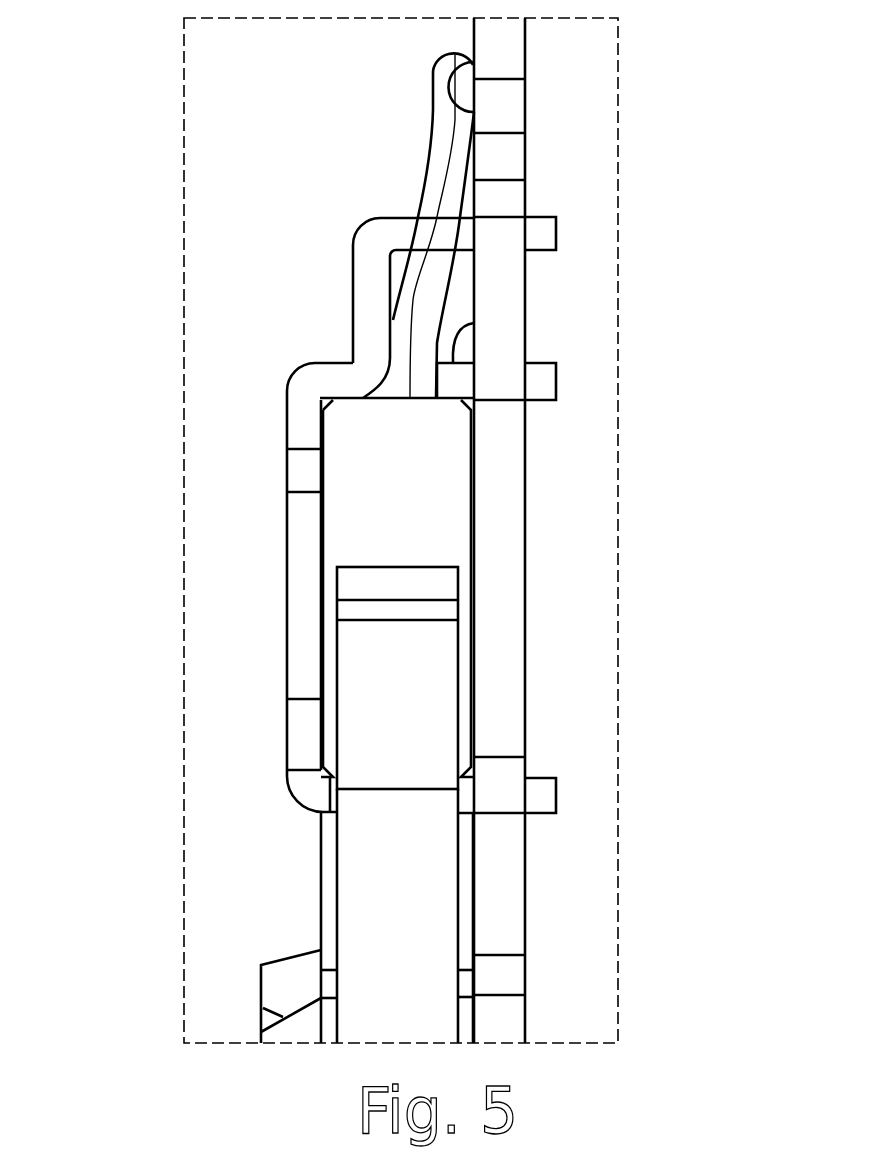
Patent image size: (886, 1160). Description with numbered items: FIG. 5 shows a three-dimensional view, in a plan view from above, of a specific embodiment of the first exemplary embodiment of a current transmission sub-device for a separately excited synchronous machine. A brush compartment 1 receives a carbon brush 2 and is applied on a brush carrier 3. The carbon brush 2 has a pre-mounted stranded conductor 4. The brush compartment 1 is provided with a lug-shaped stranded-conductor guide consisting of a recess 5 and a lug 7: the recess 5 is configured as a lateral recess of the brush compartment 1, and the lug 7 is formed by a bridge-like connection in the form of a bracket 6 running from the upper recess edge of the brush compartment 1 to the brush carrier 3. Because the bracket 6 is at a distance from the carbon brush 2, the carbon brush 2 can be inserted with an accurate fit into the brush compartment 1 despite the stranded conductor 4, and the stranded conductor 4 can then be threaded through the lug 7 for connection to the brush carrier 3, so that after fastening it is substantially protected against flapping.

The brush compartment 1 is at (310, 687).
The carbon brush 2 is at (377, 532).
The brush carrier 3 is at (495, 637).
The stranded conductor 4 is at (441, 115).
The recess 5 is at (458, 387).
The bracket 6 is at (378, 313).
The lug 7 is at (458, 298).